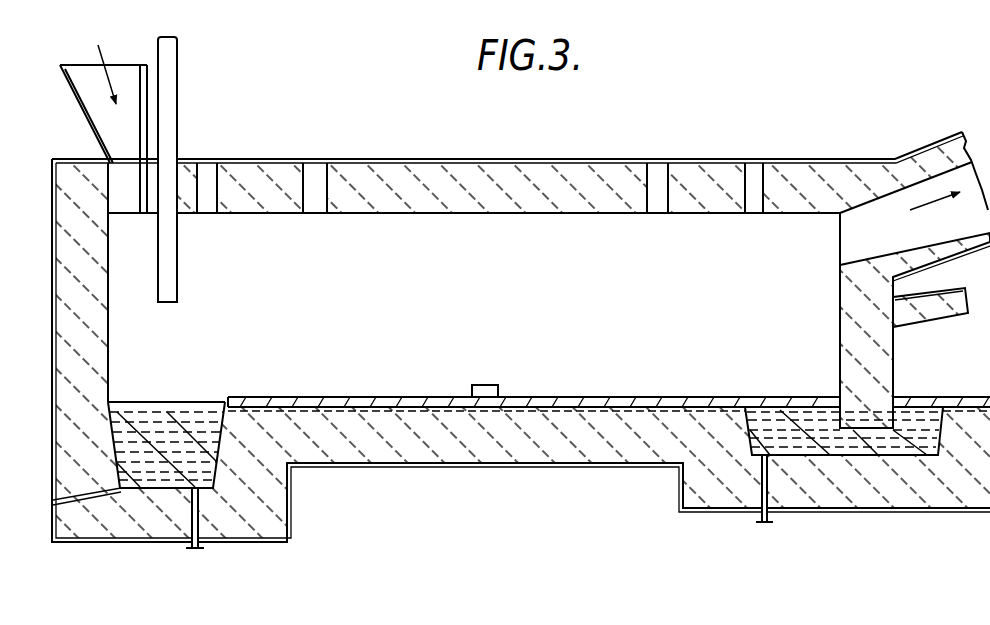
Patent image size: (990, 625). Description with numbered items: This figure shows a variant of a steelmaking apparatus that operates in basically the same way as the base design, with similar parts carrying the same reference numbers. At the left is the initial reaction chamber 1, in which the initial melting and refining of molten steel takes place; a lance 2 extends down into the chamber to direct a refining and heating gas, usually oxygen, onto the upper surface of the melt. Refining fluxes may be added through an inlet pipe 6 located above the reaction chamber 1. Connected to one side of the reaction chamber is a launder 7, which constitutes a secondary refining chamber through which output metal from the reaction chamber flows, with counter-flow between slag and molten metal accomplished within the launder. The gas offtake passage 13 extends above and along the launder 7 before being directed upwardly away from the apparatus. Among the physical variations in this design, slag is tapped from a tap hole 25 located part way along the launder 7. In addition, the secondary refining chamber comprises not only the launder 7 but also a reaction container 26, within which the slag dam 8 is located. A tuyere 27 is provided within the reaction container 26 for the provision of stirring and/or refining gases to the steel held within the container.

The initial reaction chamber 1 is at (165, 433).
The lance 2 is at (168, 72).
The inlet pipe 6 is at (205, 173).
The launder 7 is at (603, 412).
The slag dam 8 is at (895, 370).
The gas offtake passage 13 is at (440, 232).
The tap hole 25 is at (477, 385).
The reaction container 26 is at (800, 420).
The tuyere 27 is at (757, 512).